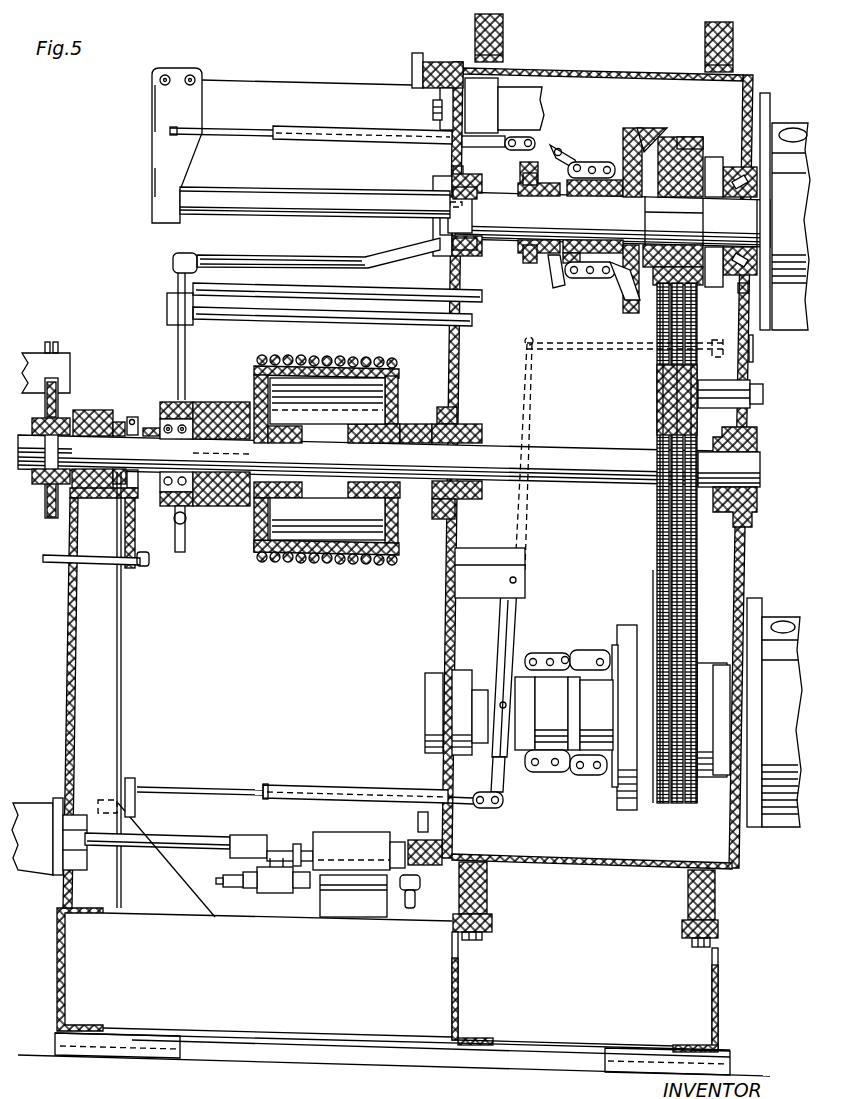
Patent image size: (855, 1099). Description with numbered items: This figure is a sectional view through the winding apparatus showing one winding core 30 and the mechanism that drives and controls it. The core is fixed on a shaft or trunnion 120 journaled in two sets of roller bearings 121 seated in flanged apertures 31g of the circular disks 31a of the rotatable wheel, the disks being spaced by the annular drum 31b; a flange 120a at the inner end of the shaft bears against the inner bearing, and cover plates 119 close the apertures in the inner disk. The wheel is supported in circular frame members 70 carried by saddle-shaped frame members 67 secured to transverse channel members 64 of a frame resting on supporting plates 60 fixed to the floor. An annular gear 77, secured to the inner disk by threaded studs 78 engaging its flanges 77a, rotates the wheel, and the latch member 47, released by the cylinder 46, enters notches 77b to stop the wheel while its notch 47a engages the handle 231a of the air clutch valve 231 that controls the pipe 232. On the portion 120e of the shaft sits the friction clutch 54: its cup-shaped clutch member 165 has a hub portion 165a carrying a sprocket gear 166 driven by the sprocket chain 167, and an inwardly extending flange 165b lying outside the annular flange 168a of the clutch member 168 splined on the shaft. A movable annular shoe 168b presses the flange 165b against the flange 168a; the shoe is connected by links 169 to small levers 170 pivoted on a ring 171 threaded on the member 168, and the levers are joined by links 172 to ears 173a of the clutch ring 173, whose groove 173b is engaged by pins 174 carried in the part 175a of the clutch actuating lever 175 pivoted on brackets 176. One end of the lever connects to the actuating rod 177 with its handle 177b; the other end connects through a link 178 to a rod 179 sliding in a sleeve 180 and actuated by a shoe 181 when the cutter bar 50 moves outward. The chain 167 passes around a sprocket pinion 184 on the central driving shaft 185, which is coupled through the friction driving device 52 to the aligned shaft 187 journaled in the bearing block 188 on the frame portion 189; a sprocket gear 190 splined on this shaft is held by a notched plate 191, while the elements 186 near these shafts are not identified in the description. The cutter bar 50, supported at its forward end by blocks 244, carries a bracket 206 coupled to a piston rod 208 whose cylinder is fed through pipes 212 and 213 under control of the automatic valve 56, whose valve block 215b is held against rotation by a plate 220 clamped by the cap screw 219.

The winding core 30 is at (790, 118).
The circular plates 31a is at (748, 542).
The annular drum 31b is at (568, 70).
The flanged apertures 31g is at (452, 172).
The cylinder 46 is at (30, 810).
The latch member 47 is at (393, 845).
The notch 47a is at (290, 852).
The cutter bar 50 is at (246, 86).
The friction driving device 52 is at (318, 568).
The friction clutch 54 is at (605, 130).
The automatic air valve 56 is at (185, 402).
The supporting plates 60 is at (160, 1058).
The transversely extending channel members 64 is at (65, 960).
The saddle-shaped frame members 67 is at (490, 932).
The circular frame members 70 is at (503, 20).
The annular gear 77 is at (432, 66).
The inwardly extending flanges 77a is at (440, 96).
The notches 77b is at (412, 72).
The threaded studs 78 is at (432, 110).
The cover plates 119 is at (440, 218).
The shaft or trunnion 120 is at (715, 195).
The flange or enlargement 120a is at (440, 256).
The shaft portion 120e is at (674, 218).
The roller bearings 121 is at (470, 250).
The cup-shaped clutch member 165 is at (670, 137).
The hub portion 165a is at (690, 137).
The inwardly extending flange 165b is at (634, 128).
The sprocket gear 166 is at (708, 157).
The sprocket chain 167 is at (668, 325).
The clutch member 168 is at (598, 180).
The radiating annular flange 168a is at (655, 128).
The movable annular shoe 168b is at (636, 128).
The links 169 is at (612, 285).
The small levers 170 is at (570, 280).
The ring 171 is at (585, 280).
The links 172 is at (560, 152).
The clutch ring 173 is at (525, 263).
The ears 173a is at (552, 288).
The annular groove 173b is at (522, 185).
The clutch actuating pins 174 is at (538, 238).
The clutch actuating lever 175 is at (522, 540).
The lever part 175a is at (503, 700).
The brackets 176 is at (488, 578).
The actuating rod 177 is at (590, 348).
The handle 177b is at (755, 352).
The link 178 is at (492, 808).
The actuating rod 179 is at (226, 136).
The sleeves 180 is at (320, 786).
The shoe 181 is at (133, 778).
The sprocket pinion 184 is at (691, 520).
The central driving shaft 185 is at (330, 465).
The bearing hub 186 is at (467, 424).
The shaft 187 is at (148, 445).
The bearing block 188 is at (92, 410).
The frame portion 189 is at (107, 612).
The sprocket gear 190 is at (40, 512).
The notched plate 191 is at (80, 330).
The transversely extending bracket 206 is at (160, 155).
The piston rod 208 is at (295, 192).
The pipe 212 is at (292, 257).
The pipe 213 is at (294, 295).
The valve block 215b is at (160, 520).
The cap screw 219 is at (134, 417).
The plate 220 is at (145, 568).
The air clutch valve 231 is at (275, 893).
The handle 231a is at (255, 862).
The pipe 232 is at (233, 888).
The blocks 244 is at (182, 840).